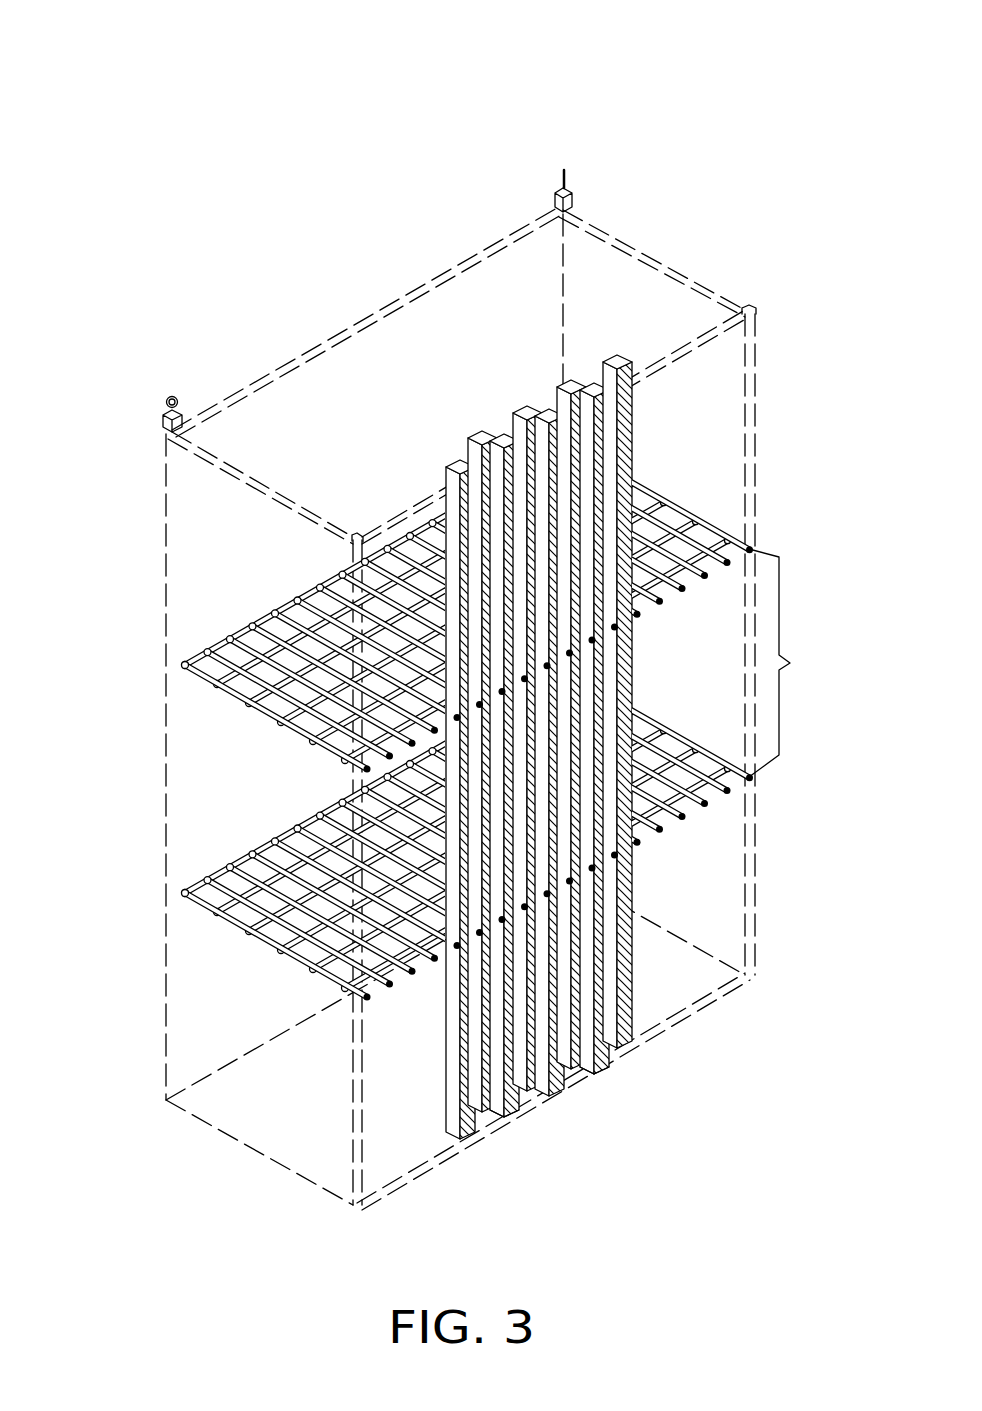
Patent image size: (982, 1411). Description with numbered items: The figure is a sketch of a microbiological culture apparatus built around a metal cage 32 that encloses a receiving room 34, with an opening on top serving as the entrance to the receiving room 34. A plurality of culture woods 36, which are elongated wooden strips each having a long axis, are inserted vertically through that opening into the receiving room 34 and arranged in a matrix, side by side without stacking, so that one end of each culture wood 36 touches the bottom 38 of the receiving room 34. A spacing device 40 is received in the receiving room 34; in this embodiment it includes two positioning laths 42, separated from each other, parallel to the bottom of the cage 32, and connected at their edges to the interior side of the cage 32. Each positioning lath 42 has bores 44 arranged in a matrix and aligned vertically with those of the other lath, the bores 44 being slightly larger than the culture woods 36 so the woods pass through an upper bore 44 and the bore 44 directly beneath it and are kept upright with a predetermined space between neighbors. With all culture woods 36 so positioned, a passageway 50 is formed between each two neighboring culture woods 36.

The cage 32 is at (367, 320).
The receiving room 34 is at (434, 631).
The culture woods 36 is at (452, 463).
The bottom 38 is at (400, 1165).
The spacing device 40 is at (789, 663).
The positioning laths 42 is at (226, 678).
The bores 44 is at (323, 606).
The passageway 50 is at (613, 1032).